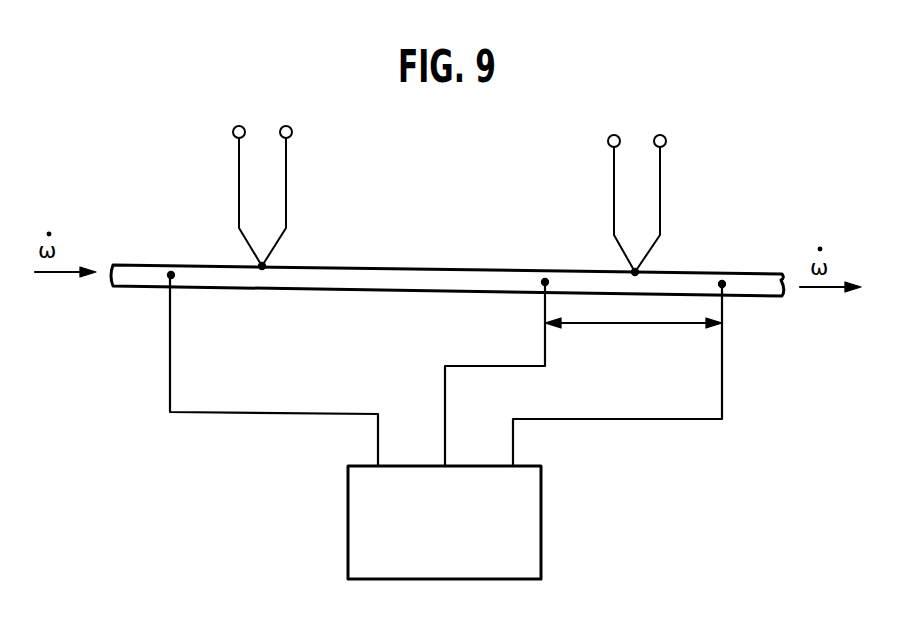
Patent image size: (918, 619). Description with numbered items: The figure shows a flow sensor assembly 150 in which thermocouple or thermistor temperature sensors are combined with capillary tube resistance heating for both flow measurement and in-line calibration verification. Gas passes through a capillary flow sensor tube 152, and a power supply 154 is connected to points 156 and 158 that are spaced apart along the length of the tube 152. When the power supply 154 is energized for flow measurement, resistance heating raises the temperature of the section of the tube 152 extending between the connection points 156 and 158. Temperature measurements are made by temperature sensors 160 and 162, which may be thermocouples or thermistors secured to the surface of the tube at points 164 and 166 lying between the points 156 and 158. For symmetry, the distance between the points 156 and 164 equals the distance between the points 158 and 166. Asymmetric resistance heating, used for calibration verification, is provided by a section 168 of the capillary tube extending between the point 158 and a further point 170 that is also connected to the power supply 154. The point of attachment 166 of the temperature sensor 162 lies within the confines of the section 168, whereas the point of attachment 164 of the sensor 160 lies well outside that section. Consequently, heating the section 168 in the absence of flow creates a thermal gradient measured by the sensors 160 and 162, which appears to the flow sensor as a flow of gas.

The flow sensor assembly 150 is at (470, 172).
The capillary flow sensor tube 152 is at (210, 268).
The power supply 154 is at (541, 526).
The connection point 156 is at (174, 276).
The connection point 158 is at (725, 285).
The temperature sensor 160 is at (290, 182).
The temperature sensor 162 is at (667, 186).
The point of attachment 164 is at (266, 265).
The point of attachment 166 is at (632, 271).
The section of capillary tube 168 is at (632, 326).
The connection point 170 is at (542, 284).